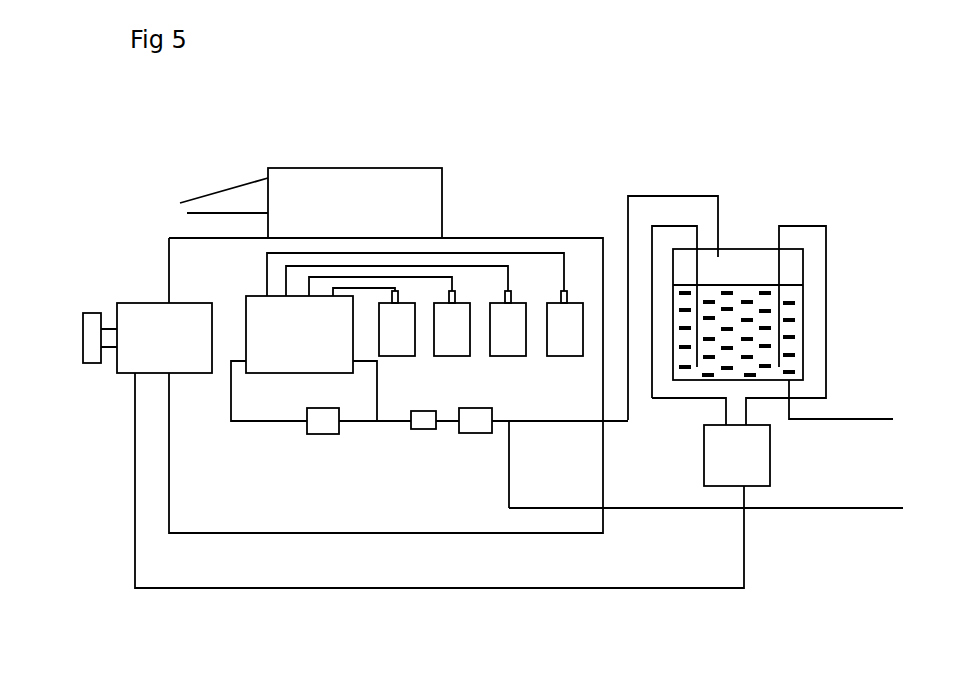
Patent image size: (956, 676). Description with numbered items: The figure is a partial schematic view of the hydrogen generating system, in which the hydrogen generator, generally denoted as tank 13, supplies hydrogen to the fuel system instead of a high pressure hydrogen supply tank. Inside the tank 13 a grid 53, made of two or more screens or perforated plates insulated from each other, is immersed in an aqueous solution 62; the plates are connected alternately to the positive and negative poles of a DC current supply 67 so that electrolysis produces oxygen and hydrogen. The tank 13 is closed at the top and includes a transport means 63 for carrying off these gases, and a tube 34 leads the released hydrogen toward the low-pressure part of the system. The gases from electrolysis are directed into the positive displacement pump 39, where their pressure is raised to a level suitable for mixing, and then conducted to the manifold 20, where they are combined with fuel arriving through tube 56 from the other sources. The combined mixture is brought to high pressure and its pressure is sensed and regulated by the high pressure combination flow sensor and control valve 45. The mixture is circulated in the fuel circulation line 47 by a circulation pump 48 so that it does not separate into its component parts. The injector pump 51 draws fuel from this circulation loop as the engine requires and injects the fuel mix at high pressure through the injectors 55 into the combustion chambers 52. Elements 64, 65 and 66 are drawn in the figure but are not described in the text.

The hydrogen generator tank 13 is at (803, 328).
The manifold 20 is at (507, 466).
The tube 34 is at (632, 412).
The positive displacement pump 39 is at (470, 435).
The high pressure combination flow sensor and control valve 45 is at (416, 432).
The fuel circulation line 47 is at (231, 387).
The circulation pump 48 is at (330, 437).
The injector pump 51 is at (290, 376).
The combustion chambers 52 is at (570, 358).
The grid 53 is at (778, 277).
The injectors 55 is at (558, 298).
The tube 56 is at (840, 513).
The aqueous solution 62 is at (742, 285).
The transport means 63 is at (672, 191).
The unit 64 is at (113, 368).
The connector 65 is at (85, 318).
The line 66 is at (643, 588).
The DC current supply 67 is at (770, 442).